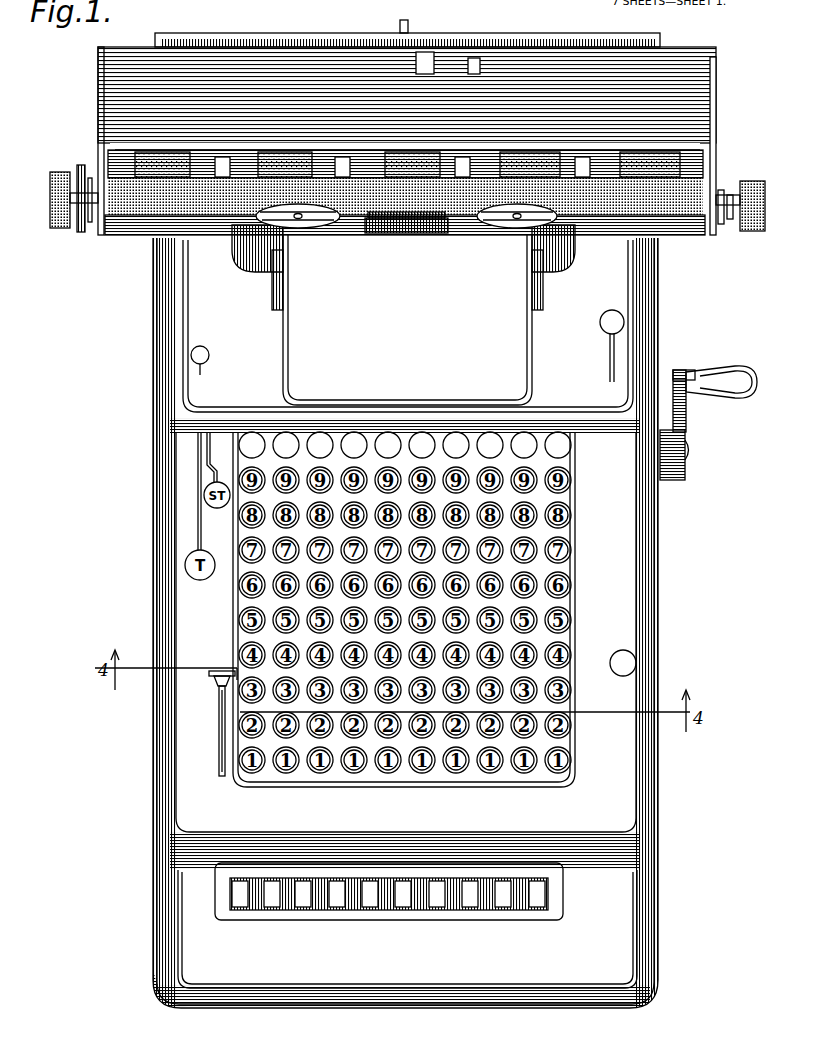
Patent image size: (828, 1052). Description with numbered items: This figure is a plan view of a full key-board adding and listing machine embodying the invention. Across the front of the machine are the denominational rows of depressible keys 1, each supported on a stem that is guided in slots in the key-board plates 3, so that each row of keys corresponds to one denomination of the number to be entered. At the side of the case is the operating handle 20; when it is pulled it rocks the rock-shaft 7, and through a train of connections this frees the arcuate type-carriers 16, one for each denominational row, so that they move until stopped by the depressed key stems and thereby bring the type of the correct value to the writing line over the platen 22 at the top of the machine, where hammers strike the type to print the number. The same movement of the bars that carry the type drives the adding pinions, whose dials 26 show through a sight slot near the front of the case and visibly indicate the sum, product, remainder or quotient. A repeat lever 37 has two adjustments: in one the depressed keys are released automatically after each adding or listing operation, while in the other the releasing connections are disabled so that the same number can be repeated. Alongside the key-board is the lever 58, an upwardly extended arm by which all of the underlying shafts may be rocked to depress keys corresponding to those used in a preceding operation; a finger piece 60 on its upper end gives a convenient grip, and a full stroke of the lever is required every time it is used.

The depressible keys 1 is at (466, 470).
The key-board plates 3 is at (268, 800).
The rock-shaft 7 is at (690, 455).
The type-carriers 16 is at (420, 237).
The operating handle 20 is at (683, 412).
The platen 22 is at (132, 237).
The dials 26 is at (372, 908).
The repeat lever 37 is at (620, 322).
The lever 58 is at (220, 698).
The finger piece 60 is at (214, 676).